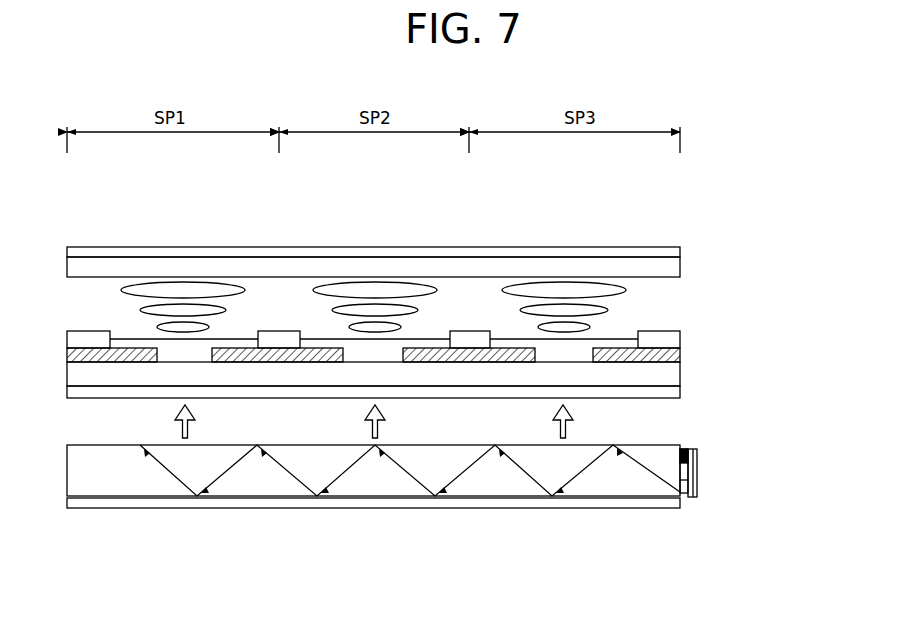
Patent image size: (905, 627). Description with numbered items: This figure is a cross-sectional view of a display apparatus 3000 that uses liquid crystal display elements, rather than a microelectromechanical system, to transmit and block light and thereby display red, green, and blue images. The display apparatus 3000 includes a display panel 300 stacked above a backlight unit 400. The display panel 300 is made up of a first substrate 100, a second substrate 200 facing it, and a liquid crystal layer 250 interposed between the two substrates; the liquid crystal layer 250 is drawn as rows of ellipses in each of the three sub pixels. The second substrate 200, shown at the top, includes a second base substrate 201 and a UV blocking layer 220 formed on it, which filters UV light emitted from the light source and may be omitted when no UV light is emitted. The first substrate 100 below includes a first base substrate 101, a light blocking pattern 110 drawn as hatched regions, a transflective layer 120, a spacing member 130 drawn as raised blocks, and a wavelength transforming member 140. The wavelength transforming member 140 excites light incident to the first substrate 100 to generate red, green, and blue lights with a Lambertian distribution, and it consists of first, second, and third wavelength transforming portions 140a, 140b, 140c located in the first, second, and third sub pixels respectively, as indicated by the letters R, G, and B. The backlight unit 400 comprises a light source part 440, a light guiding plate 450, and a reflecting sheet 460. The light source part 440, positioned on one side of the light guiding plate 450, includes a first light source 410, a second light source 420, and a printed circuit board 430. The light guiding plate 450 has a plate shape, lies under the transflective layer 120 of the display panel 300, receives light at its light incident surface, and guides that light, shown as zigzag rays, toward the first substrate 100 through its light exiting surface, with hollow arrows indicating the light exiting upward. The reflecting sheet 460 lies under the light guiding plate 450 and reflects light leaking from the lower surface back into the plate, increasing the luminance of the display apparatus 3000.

The display apparatus 3000 is at (222, 213).
The display panel 300 is at (783, 237).
The second substrate 200 is at (739, 237).
The UV blocking layer 220 is at (680, 252).
The second base substrate 201 is at (680, 273).
The liquid crystal layer 250 is at (608, 308).
The first substrate 100 is at (739, 323).
The spacing member 130 is at (680, 340).
The light blocking pattern 110 is at (680, 355).
The first base substrate 101 is at (680, 376).
The transflective layer 120 is at (680, 396).
The backlight unit 400 is at (803, 423).
The light source part 440 is at (759, 423).
The second light source 420 is at (687, 449).
The first light source 410 is at (697, 487).
The printed circuit board 430 is at (696, 497).
The light guiding plate 450 is at (67, 483).
The reflecting sheet 460 is at (592, 503).
The wavelength transforming member 140 is at (375, 476).
The first wavelength transforming portion 140a is at (203, 358).
The second wavelength transforming portion 140b is at (358, 358).
The third wavelength transforming portion 140c is at (512, 460).